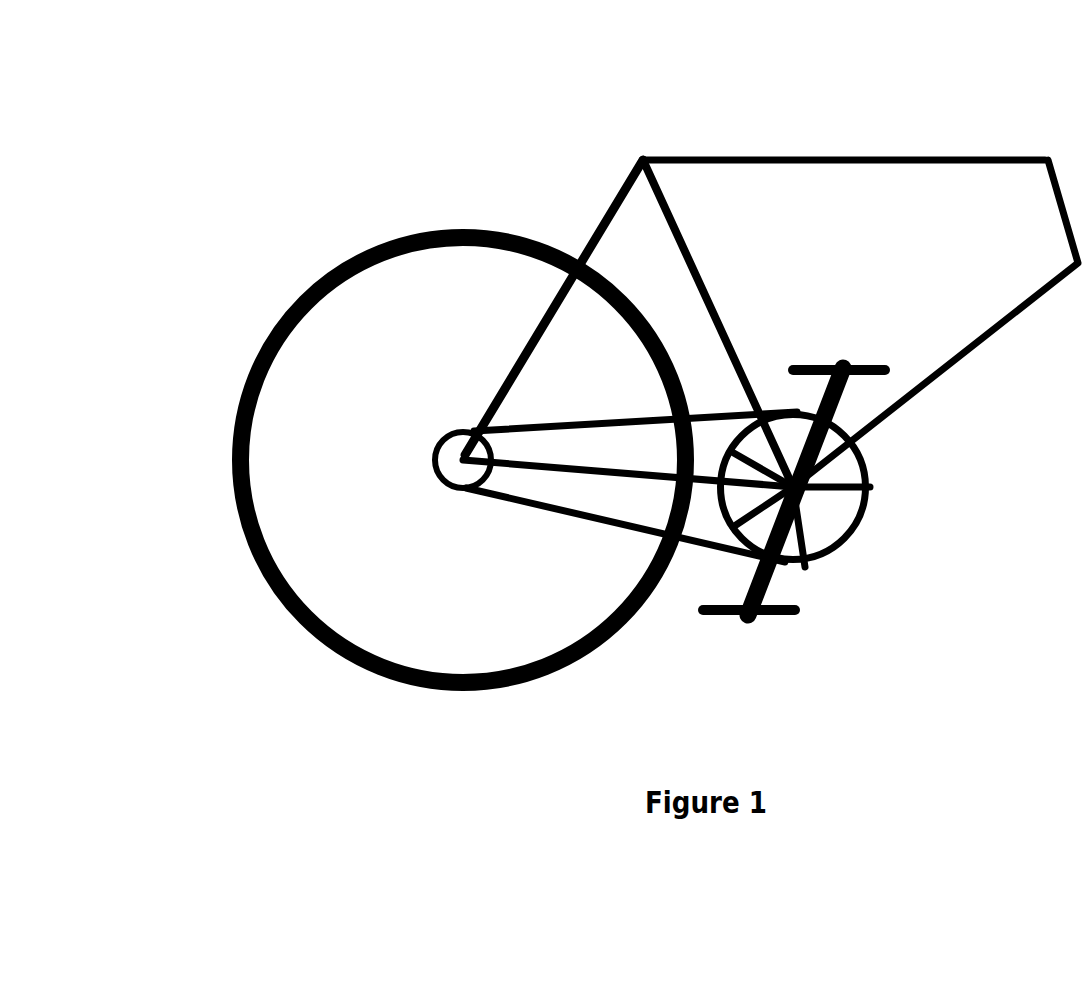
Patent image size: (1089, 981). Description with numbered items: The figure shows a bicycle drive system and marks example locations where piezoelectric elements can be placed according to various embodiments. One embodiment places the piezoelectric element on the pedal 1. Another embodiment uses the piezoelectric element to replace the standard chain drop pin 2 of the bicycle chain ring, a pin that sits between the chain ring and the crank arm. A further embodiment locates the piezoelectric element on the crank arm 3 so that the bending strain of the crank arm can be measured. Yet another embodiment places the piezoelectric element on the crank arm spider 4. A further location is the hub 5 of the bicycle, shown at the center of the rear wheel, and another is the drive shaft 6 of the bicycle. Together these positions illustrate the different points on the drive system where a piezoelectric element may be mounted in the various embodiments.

The piezoelectric element on the pedal 1 is at (837, 363).
The piezoelectric element replacing the chain drop pin 2 is at (805, 413).
The piezoelectric element on the crank arm 3 is at (835, 405).
The piezoelectric element on the crank arm spider 4 is at (843, 493).
The piezoelectric element on the hub 5 is at (463, 460).
The piezoelectric element on the drive shaft 6 is at (800, 497).